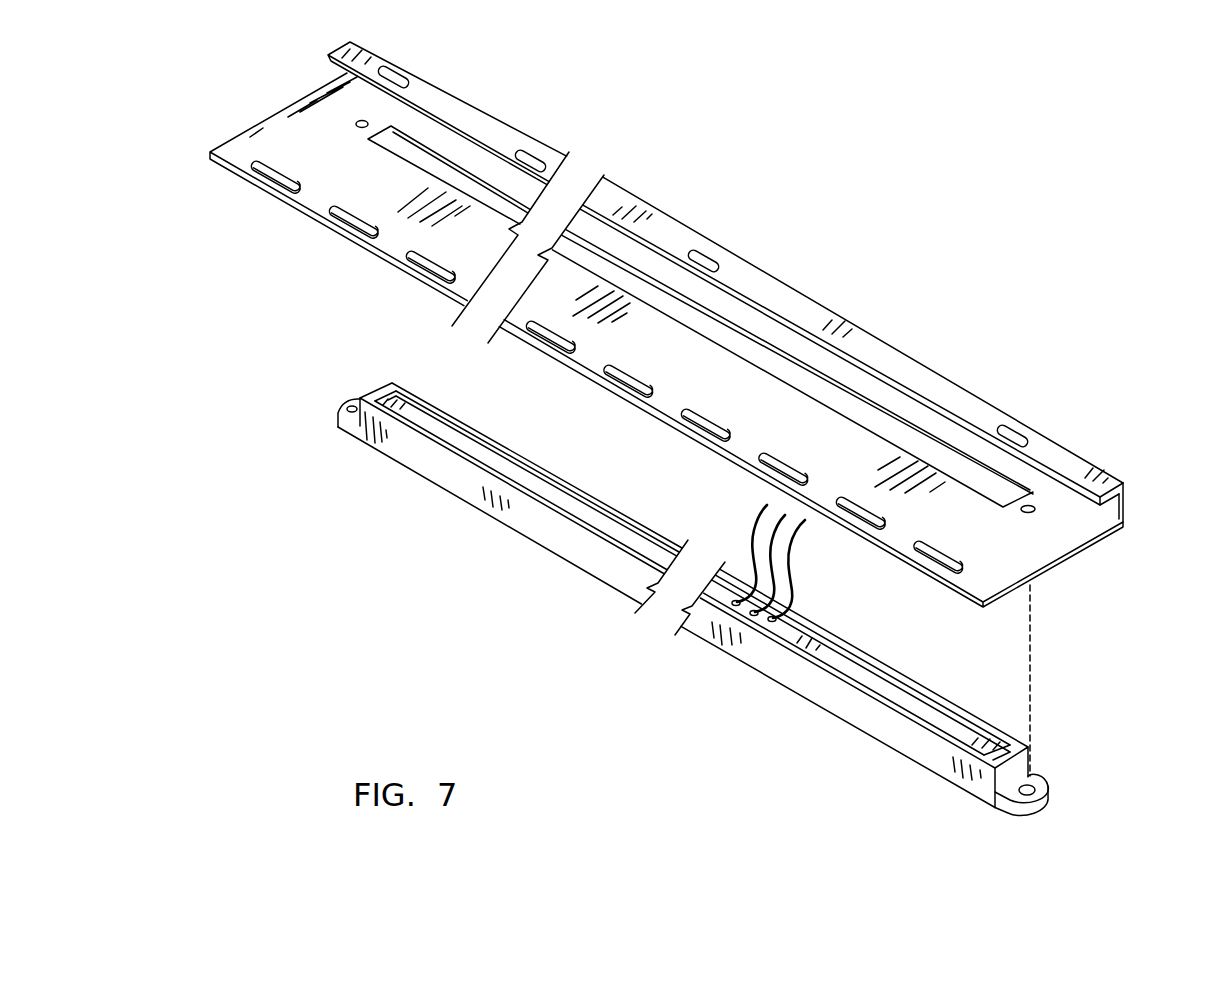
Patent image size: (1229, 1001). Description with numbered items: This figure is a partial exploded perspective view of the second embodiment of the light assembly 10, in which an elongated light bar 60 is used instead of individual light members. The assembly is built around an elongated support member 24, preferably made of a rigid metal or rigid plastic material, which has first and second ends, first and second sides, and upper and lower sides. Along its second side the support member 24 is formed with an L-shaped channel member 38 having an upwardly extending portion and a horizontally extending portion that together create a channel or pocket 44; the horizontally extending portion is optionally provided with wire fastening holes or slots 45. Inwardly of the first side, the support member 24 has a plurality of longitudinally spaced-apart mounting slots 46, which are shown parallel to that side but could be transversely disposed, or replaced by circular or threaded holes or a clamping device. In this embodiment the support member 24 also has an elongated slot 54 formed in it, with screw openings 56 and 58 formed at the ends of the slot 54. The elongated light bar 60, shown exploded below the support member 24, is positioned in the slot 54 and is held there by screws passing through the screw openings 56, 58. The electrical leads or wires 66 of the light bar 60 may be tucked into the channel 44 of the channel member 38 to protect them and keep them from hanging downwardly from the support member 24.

The light assembly 10 is at (899, 300).
The support member 24 is at (763, 303).
The L-shaped channel member 38 is at (1130, 491).
The channel 44 is at (1120, 512).
The wire fastening holes or slots 45 is at (708, 265).
The mounting slots 46 is at (720, 444).
The elongated slot 54 is at (989, 490).
The screw opening 56 is at (359, 120).
The screw opening 58 is at (1036, 511).
The light bar 60 is at (693, 599).
The electrical leads or wires 66 is at (797, 575).